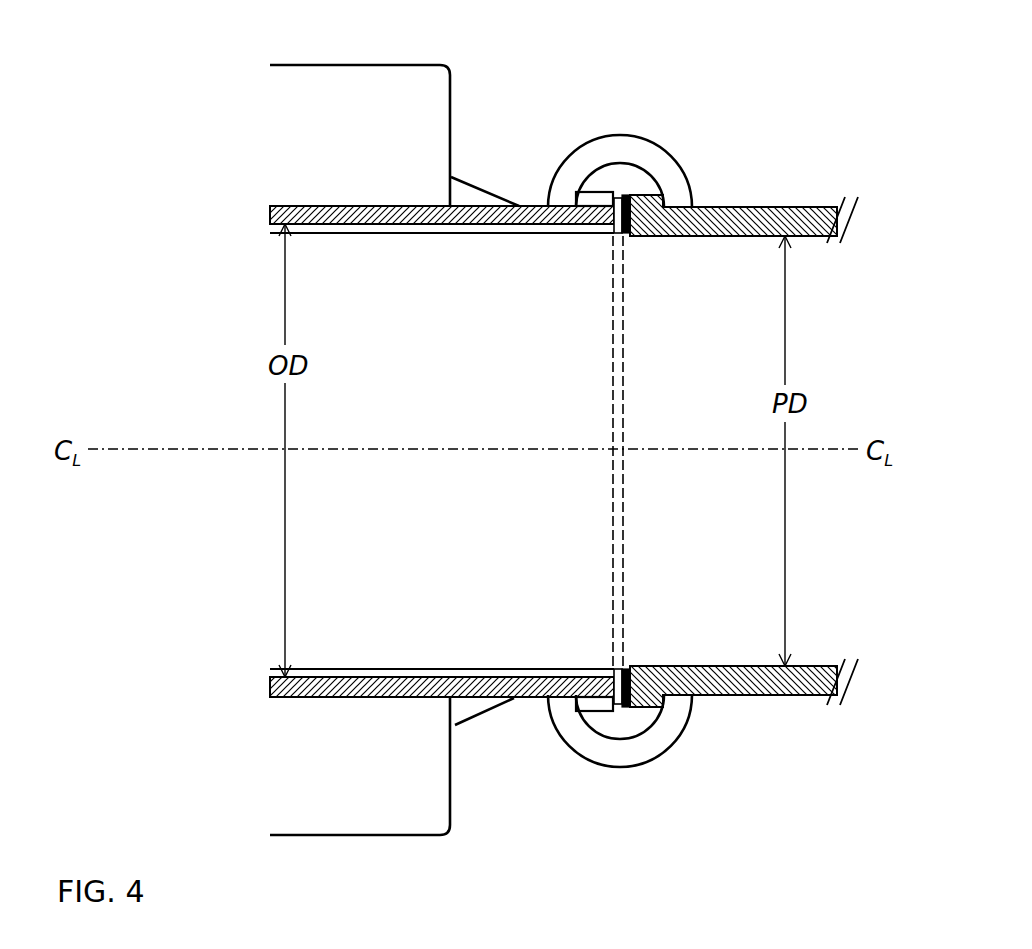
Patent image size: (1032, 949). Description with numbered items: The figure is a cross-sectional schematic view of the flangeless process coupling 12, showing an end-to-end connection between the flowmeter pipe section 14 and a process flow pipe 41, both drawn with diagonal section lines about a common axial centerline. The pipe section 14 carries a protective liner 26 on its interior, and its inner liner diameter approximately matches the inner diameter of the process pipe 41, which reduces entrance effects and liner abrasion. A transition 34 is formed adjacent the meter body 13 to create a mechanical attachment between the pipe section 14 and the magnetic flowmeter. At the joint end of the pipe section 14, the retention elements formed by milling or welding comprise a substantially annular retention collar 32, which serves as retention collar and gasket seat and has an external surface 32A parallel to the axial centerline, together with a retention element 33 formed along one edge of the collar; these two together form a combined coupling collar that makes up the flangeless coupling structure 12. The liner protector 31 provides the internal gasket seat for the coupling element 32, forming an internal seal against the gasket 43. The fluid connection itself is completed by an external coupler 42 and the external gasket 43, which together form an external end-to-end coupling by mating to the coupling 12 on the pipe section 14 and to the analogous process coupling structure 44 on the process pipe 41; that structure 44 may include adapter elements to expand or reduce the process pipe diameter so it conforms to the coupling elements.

The flangeless process coupling 12 is at (516, 429).
The meter body 13 is at (287, 65).
The pipe section 14 is at (270, 690).
The protective liner 26 is at (338, 672).
The liner protector 31 is at (619, 238).
The retention collar 32 is at (592, 229).
The external surface 32A is at (604, 722).
The retention element 33 is at (556, 223).
The transition 34 is at (470, 197).
The process flow pipe 41 is at (737, 207).
The external coupler 42 is at (600, 138).
The external gasket 43 is at (624, 236).
The process coupling structure 44 is at (655, 660).